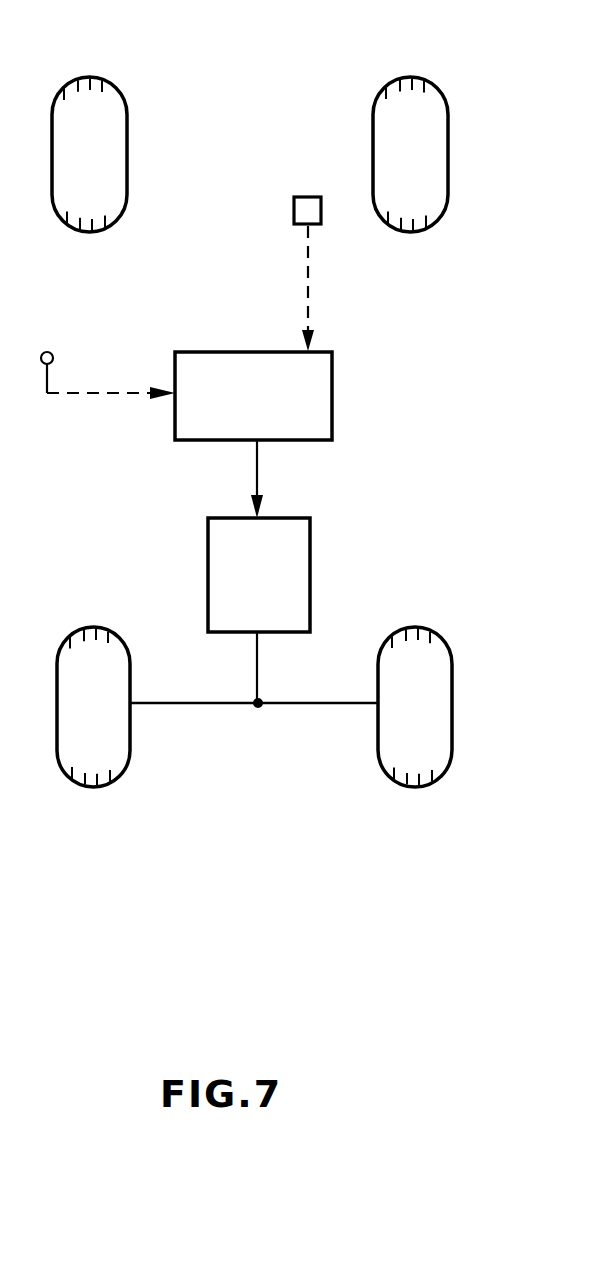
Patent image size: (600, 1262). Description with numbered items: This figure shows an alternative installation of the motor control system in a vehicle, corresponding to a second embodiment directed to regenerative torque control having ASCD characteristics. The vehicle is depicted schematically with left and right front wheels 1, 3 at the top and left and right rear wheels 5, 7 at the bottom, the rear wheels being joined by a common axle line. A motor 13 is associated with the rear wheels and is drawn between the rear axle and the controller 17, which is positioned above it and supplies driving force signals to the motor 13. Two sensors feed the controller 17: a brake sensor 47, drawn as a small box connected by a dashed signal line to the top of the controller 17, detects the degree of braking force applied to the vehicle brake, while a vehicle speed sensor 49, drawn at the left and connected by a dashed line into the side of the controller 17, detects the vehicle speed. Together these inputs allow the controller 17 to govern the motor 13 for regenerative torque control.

The left front wheel 1 is at (115, 88).
The right front wheel 3 is at (435, 87).
The left rear wheel 5 is at (95, 787).
The right rear wheel 7 is at (415, 787).
The motor 13 is at (310, 560).
The controller 17 is at (332, 398).
The brake sensor 47 is at (293, 204).
The vehicle speed sensor 49 is at (53, 352).